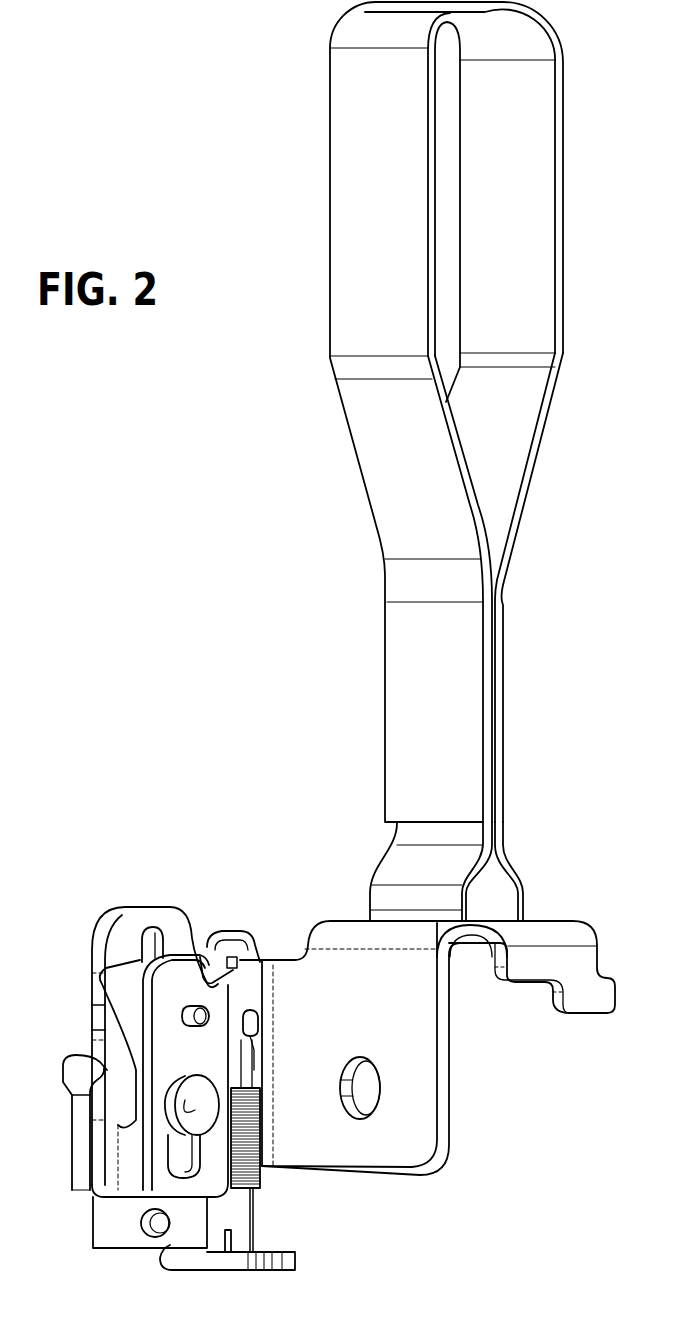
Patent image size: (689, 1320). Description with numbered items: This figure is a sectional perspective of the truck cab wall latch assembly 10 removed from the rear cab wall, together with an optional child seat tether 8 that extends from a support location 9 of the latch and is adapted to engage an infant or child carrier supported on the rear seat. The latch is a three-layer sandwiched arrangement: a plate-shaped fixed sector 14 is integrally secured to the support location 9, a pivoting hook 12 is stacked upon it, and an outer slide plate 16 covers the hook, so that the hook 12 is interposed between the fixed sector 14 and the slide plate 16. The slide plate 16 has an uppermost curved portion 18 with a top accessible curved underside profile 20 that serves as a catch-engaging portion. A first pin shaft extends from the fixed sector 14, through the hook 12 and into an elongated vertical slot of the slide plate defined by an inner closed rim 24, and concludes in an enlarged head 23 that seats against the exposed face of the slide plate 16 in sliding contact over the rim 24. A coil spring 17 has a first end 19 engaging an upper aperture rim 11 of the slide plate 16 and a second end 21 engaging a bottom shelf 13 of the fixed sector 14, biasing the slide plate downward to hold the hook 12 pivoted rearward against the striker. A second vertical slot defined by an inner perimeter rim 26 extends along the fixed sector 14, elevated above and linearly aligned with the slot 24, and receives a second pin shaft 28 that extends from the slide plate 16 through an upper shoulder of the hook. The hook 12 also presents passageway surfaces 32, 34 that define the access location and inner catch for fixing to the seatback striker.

The child seat tether 8 is at (542, 255).
The support location 9 is at (556, 920).
The latch assembly 10 is at (70, 863).
The perimeter rim 11 is at (258, 1013).
The hook 12 is at (98, 981).
The bottom shelf 13 is at (242, 1271).
The fixed sector 14 is at (150, 906).
The slide plate 16 is at (252, 1058).
The coil spring 17 is at (258, 1128).
The uppermost portion 18 is at (230, 930).
The first end 19 is at (256, 1028).
The curved underside profile 20 is at (237, 952).
The second end 21 is at (250, 1242).
The enlarged head 23 is at (183, 1106).
The inner closed rim 24 is at (186, 1140).
The inner perimeter defining rim 26 is at (145, 945).
The second pin shaft 28 is at (212, 1014).
The passageway surface 32 is at (88, 1072).
The passageway surface 34 is at (96, 1017).